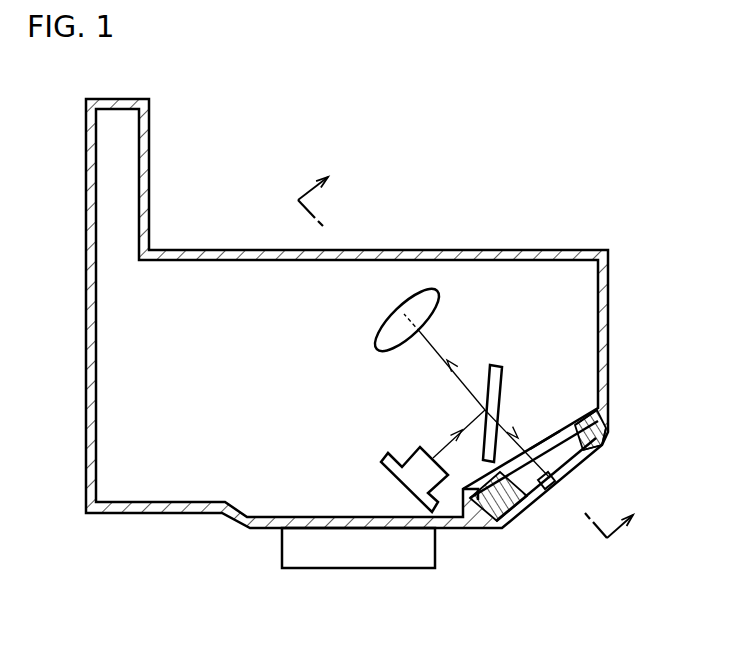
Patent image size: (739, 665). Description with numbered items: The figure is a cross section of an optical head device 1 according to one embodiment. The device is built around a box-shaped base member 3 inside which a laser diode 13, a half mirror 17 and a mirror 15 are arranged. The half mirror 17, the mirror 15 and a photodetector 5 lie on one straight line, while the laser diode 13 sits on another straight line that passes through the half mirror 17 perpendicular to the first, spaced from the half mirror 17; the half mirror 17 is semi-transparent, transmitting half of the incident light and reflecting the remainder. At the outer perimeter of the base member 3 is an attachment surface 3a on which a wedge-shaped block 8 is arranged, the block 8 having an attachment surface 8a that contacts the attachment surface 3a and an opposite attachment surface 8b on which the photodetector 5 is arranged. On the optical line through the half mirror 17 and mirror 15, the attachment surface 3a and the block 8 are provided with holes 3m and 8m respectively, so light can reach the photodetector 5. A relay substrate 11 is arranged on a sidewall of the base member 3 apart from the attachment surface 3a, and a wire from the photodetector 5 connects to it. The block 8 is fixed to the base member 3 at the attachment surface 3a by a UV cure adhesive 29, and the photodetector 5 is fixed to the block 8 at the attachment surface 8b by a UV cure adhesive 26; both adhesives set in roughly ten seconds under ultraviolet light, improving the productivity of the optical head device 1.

The optical head device 1 is at (565, 142).
The base member 3 is at (605, 290).
The attachment surface 3a is at (493, 513).
The hole 3m is at (541, 435).
The photodetector 5 is at (541, 511).
The block 8 is at (605, 433).
The attachment surface 8a is at (575, 430).
The attachment surface 8b is at (605, 450).
The hole 8m is at (575, 465).
The relay substrate 11 is at (309, 570).
The laser diode 13 is at (407, 484).
The mirror 15 is at (407, 298).
The half mirror 17 is at (498, 363).
The UV cure adhesive 26 is at (510, 527).
The UV cure adhesive 29 is at (478, 495).